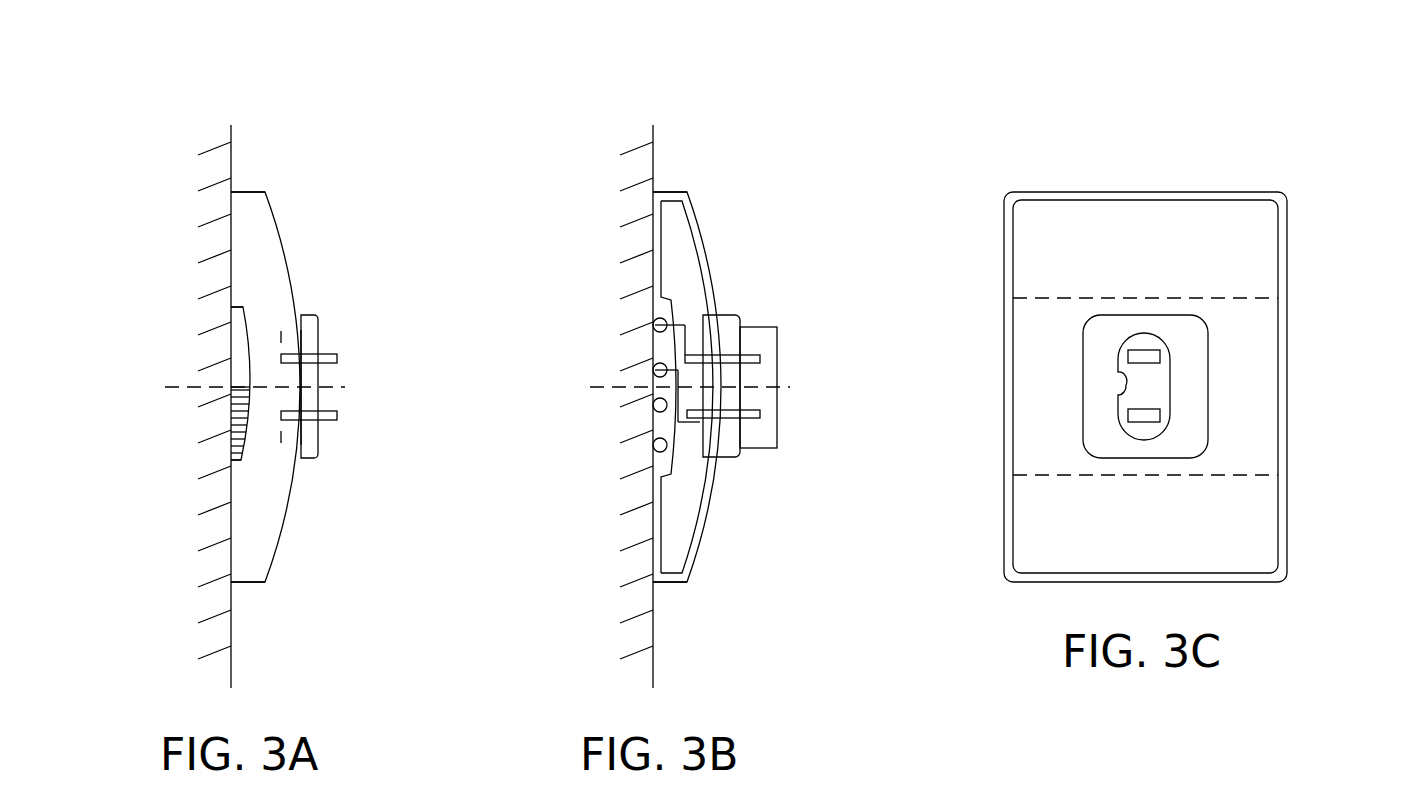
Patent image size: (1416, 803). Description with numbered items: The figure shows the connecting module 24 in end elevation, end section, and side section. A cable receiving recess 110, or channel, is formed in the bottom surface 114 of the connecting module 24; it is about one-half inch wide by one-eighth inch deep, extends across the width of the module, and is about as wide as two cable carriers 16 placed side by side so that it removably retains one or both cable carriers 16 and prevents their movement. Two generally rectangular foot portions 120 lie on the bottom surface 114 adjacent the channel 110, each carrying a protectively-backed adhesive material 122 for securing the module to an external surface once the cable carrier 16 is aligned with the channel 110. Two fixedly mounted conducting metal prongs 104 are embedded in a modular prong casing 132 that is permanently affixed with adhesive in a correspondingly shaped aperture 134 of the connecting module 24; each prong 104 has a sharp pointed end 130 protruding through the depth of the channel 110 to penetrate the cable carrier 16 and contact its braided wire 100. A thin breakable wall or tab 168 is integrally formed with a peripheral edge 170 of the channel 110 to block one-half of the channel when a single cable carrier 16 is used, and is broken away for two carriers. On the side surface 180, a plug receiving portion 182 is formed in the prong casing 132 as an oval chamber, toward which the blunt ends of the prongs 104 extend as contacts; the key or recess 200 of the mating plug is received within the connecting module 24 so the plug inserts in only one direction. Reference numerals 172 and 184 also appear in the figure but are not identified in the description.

In FIG. 3A, the connecting module 24 is at (310, 147).
In FIG. 3B, the connecting module 24 is at (725, 125).
In FIG. 3C, the connecting module 24 is at (974, 165).
In FIG. 3A, the bottom surface 114 is at (145, 492).
In FIG. 3B, the bottom surface 114 is at (600, 495).
In FIG. 3A, the foot portions 120 is at (231, 237).
In FIG. 3B, the foot portions 120 is at (653, 227).
In FIG. 3A, the protectively-backed adhesive material 122 is at (228, 202).
In FIG. 3B, the protectively-backed adhesive material 122 is at (652, 202).
In FIG. 3A, the cable receiving recess 110 is at (238, 332).
In FIG. 3B, the cable receiving recess 110 is at (658, 343).
In FIG. 3A, the upper portion of mounting member 172 is at (195, 385).
In FIG. 3A, the tab 168 is at (228, 415).
In FIG. 3A, the peripheral edge 170 is at (233, 465).
In FIG. 3A, the plug receiving portion 182 is at (290, 343).
In FIG. 3C, the plug receiving portion 182 is at (1197, 432).
In FIG. 3A, the conducting metal prongs 104 is at (338, 354).
In FIG. 3B, the conducting metal prongs 104 is at (760, 355).
In FIG. 3C, the conducting metal prongs 104 is at (1162, 413).
In FIG. 3A, the insertion direction arrow 184 is at (350, 372).
In FIG. 3A, the aperture 134 is at (350, 402).
In FIG. 3A, the modular prong casing 132 is at (290, 402).
In FIG. 3B, the modular prong casing 132 is at (760, 450).
In FIG. 3B, the sharp pointed end 130 is at (680, 358).
In FIG. 3B, the cable carrier 16 is at (648, 351).
In FIG. 3B, the braided wire 100 is at (655, 407).
In FIG. 3C, the key or recess 200 is at (1118, 386).
In FIG. 3C, the side surface 180 is at (1030, 528).